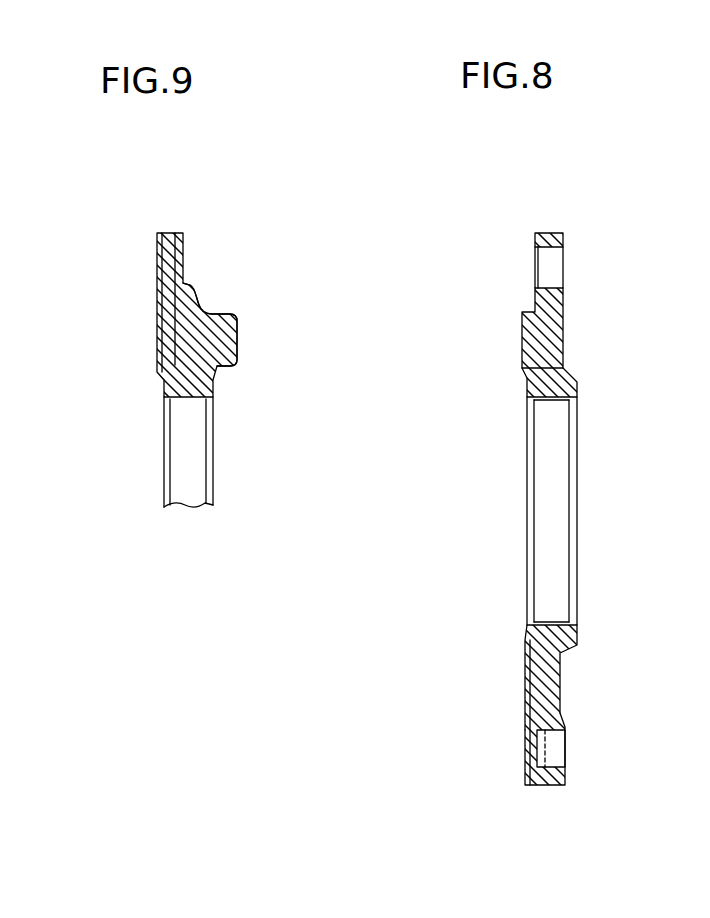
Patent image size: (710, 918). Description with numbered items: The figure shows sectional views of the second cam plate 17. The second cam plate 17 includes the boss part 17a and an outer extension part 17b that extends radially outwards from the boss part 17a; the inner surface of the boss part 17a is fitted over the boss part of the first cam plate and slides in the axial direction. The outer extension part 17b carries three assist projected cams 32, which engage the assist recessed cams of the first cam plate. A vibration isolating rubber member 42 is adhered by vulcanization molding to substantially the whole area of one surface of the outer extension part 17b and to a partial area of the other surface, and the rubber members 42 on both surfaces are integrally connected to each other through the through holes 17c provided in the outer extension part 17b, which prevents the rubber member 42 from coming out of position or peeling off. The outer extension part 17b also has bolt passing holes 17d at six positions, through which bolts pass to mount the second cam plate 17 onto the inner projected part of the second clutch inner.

In FIG. 9, the second cam plate 17 is at (247, 187).
In FIG. 8, the second cam plate 17 is at (592, 180).
In FIG. 8, the boss part 17a is at (550, 392).
In FIG. 8, the outer extension part 17b is at (550, 300).
In FIG. 8, the through holes 17c is at (542, 688).
In FIG. 8, the bolt passing holes 17d is at (548, 272).
In FIG. 9, the vibration isolating rubber member 42 is at (162, 270).
In FIG. 8, the vibration isolating rubber member 42 is at (530, 652).
In FIG. 9, the assist projected cam 32 is at (222, 333).